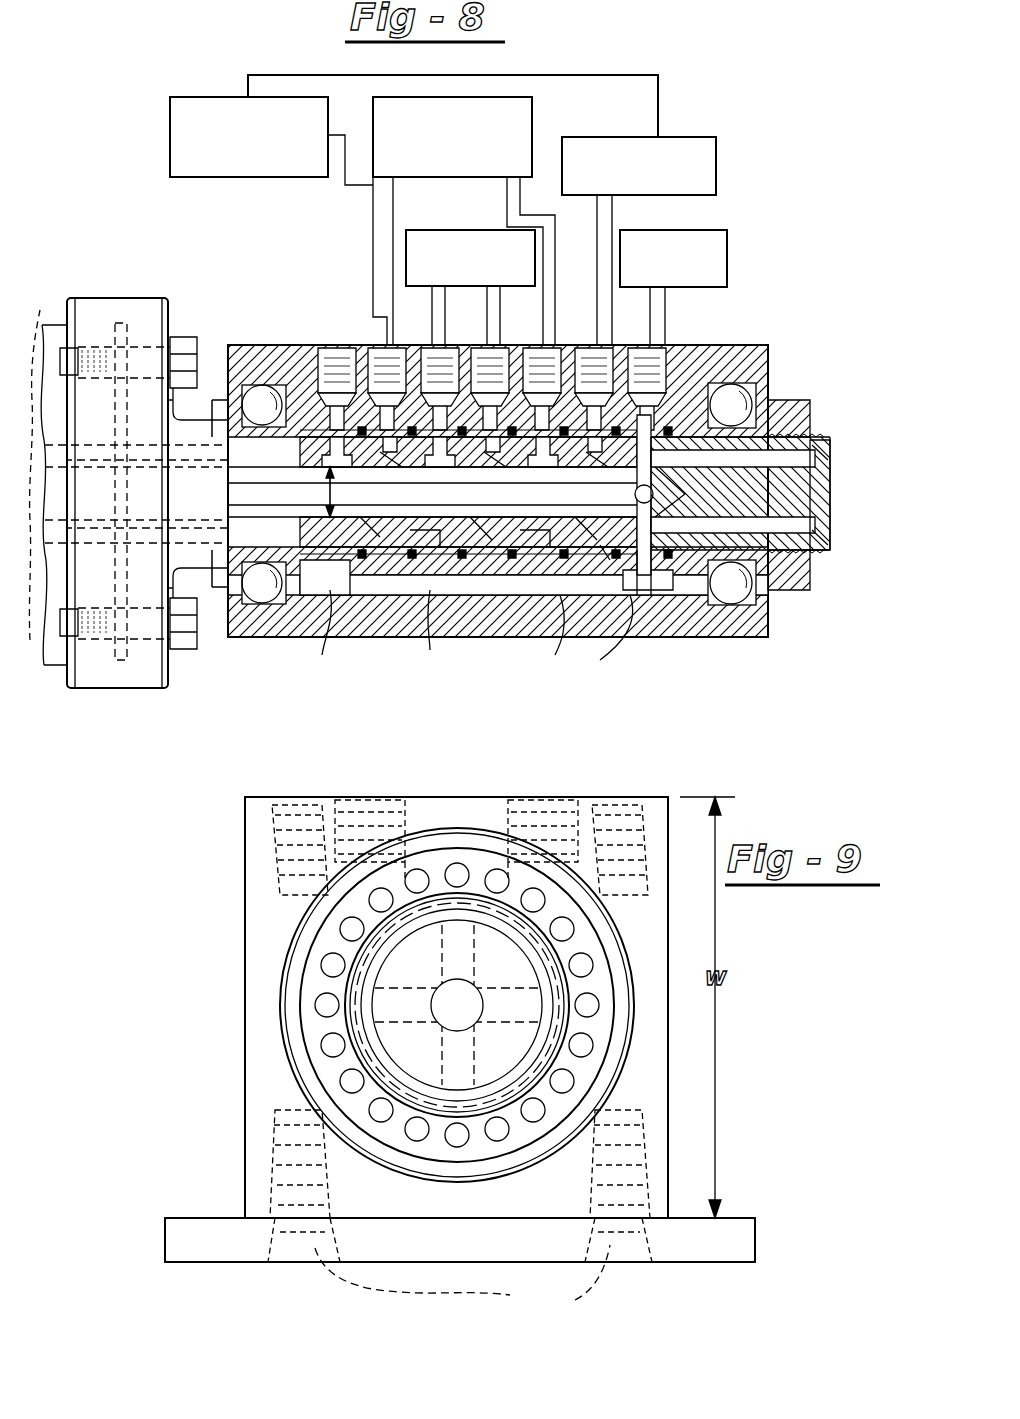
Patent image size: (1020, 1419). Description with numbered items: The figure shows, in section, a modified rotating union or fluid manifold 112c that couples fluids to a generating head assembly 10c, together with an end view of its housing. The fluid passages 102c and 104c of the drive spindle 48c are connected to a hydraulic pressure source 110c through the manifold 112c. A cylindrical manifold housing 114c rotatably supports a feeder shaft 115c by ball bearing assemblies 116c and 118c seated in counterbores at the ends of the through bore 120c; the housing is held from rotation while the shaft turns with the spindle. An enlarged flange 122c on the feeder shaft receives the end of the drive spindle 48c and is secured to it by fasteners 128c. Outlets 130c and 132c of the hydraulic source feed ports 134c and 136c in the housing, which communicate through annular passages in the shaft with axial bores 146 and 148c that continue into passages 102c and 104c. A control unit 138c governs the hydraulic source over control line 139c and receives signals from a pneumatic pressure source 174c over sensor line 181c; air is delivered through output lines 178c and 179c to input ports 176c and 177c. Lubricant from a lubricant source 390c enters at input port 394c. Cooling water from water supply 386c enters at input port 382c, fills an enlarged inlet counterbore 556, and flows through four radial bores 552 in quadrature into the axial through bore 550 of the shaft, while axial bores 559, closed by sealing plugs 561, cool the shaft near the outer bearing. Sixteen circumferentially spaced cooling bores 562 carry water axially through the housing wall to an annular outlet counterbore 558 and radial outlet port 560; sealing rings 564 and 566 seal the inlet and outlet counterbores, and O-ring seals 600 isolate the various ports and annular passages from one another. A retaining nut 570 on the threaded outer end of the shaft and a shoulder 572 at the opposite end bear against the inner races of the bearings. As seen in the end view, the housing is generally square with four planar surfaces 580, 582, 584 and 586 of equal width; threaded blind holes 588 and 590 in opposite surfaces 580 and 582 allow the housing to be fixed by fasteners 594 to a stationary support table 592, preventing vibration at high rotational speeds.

In FIG. 8, the generating head assembly 10c is at (105, 730).
In FIG. 8, the drive spindle 48c is at (90, 325).
In FIG. 8, the fluid passage 102c is at (48, 517).
In FIG. 8, the fluid passage 104c is at (110, 510).
In FIG. 8, the hydraulic pressure source 110c is at (532, 125).
In FIG. 8, the fluid manifold or rotating union 112c is at (468, 655).
In FIG. 9, the fluid manifold or rotating union 112c is at (232, 860).
In FIG. 8, the manifold housing 114c is at (395, 637).
In FIG. 9, the manifold housing 114c is at (490, 808).
In FIG. 8, the feeder shaft 115c is at (780, 400).
In FIG. 8, the ball bearing assembly 116c is at (768, 370).
In FIG. 8, the ball bearing assembly 118c is at (215, 360).
In FIG. 8, the through bore 120c is at (546, 634).
In FIG. 8, the enlarged flange 122c is at (118, 298).
In FIG. 8, the fasteners 128c is at (185, 649).
In FIG. 8, the outlet 130c is at (386, 190).
In FIG. 8, the outlet 132c is at (505, 185).
In FIG. 8, the port 134c is at (410, 348).
In FIG. 8, the port 136c is at (560, 337).
In FIG. 8, the control unit 138c is at (170, 135).
In FIG. 8, the control line 139c is at (345, 178).
In FIG. 8, the bore 146 is at (435, 627).
In FIG. 8, the bore 148c is at (462, 462).
In FIG. 8, the pneumatic pressure source 174c is at (716, 157).
In FIG. 8, the input port 176c is at (370, 348).
In FIG. 8, the input port 177c is at (660, 335).
In FIG. 8, the output line 178c is at (507, 192).
In FIG. 8, the output line 179c is at (612, 215).
In FIG. 8, the sensor line 181c is at (658, 92).
In FIG. 8, the input port 382c is at (690, 340).
In FIG. 8, the water supply 386c is at (727, 243).
In FIG. 8, the lubricant source 390c is at (406, 256).
In FIG. 8, the input port 394c is at (487, 340).
In FIG. 8, the axial through bore 550 is at (636, 494).
In FIG. 9, the axial through bore 550 is at (480, 1003).
In FIG. 8, the radial bores 552 is at (643, 595).
In FIG. 9, the radial bores 552 is at (425, 945).
In FIG. 8, the inlet counterbore 556 is at (700, 350).
In FIG. 9, the inlet counterbore 556 is at (438, 860).
In FIG. 8, the outlet counterbore 558 is at (351, 631).
In FIG. 8, the axial bores 559 is at (718, 462).
In FIG. 8, the radial outlet port 560 is at (335, 348).
In FIG. 8, the sealing plugs 561 is at (828, 470).
In FIG. 8, the cooling bores 562 is at (600, 630).
In FIG. 9, the cooling bores 562 is at (378, 1110).
In FIG. 8, the annular sealing ring 564 is at (690, 637).
In FIG. 9, the annular sealing ring 564 is at (345, 1005).
In FIG. 8, the annular sealing ring 566 is at (285, 637).
In FIG. 9, the annular sealing ring 566 is at (310, 930).
In FIG. 8, the retaining nut 570 is at (795, 415).
In FIG. 8, the shoulder 572 is at (236, 410).
In FIG. 9, the planar surface 580 is at (478, 1220).
In FIG. 9, the planar surface 582 is at (463, 797).
In FIG. 9, the planar surface 584 is at (668, 975).
In FIG. 9, the planar surface 586 is at (245, 975).
In FIG. 9, the threaded blind holes 588 is at (283, 1125).
In FIG. 9, the threaded blind holes 590 is at (302, 800).
In FIG. 9, the support table 592 is at (695, 1240).
In FIG. 9, the fasteners 594 is at (462, 1277).
In FIG. 8, the O-ring seals 600 is at (350, 450).